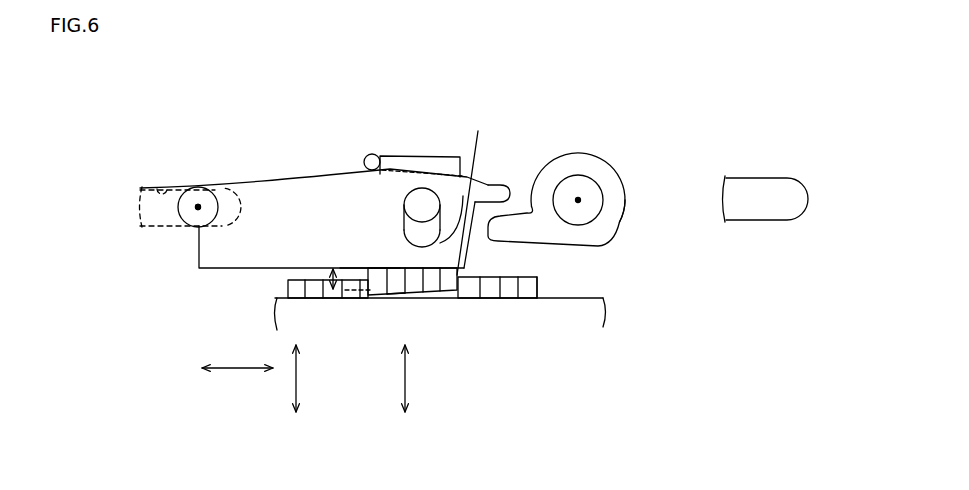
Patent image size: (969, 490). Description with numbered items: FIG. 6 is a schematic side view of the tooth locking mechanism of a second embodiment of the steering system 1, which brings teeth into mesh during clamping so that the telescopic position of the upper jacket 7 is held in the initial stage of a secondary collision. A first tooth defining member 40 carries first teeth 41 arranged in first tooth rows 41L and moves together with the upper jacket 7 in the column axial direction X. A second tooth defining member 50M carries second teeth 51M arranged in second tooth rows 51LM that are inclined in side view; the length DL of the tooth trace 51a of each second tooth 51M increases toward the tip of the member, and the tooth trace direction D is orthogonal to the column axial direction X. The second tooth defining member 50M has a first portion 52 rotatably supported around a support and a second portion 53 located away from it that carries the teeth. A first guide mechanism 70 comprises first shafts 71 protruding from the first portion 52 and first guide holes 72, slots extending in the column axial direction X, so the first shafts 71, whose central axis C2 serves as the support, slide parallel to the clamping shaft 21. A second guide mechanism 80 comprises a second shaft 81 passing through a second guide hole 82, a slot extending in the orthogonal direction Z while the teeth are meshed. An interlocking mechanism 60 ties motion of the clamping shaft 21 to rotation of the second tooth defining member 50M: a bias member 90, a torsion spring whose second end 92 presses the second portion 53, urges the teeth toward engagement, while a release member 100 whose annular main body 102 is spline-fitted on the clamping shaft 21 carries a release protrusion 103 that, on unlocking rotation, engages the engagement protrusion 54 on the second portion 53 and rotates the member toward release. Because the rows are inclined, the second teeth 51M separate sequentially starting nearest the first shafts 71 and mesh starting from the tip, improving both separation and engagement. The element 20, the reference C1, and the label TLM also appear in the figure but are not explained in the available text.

The steering system 1 is at (539, 103).
The upper jacket 7 is at (580, 296).
The striker 20 is at (756, 184).
The clamping shaft 21 is at (604, 202).
The first tooth defining member 40 is at (286, 294).
The first teeth 41 is at (493, 298).
The first tooth rows 41L is at (540, 292).
The second tooth defining member 50M is at (300, 175).
The second tooth rows 51LM is at (360, 268).
The second teeth 51M is at (429, 293).
The tooth trace 51a is at (401, 280).
The first portion 52 is at (210, 262).
The second portion 53 is at (463, 246).
The engagement protrusion 54 is at (492, 186).
The interlocking mechanism 60 is at (589, 192).
The first guide mechanism 70 is at (190, 160).
The first shafts 71 is at (205, 175).
The first guide holes 72 is at (161, 186).
The second guide mechanism 80 is at (453, 175).
The second shaft 81 is at (423, 198).
The second guide hole 82 is at (495, 130).
The bias member 90 is at (407, 151).
The second end 92 is at (371, 154).
The release member 100 is at (622, 173).
The annular main body 102 is at (615, 190).
The release protrusion 103 is at (505, 228).
The rotation center of latch C1 is at (578, 200).
The central axis C2 is at (197, 213).
The rotation direction of latch TLM is at (572, 135).
The length DL is at (331, 268).
The column axial direction X is at (238, 370).
The orthogonal direction Z is at (298, 378).
The tooth trace direction D is at (407, 378).